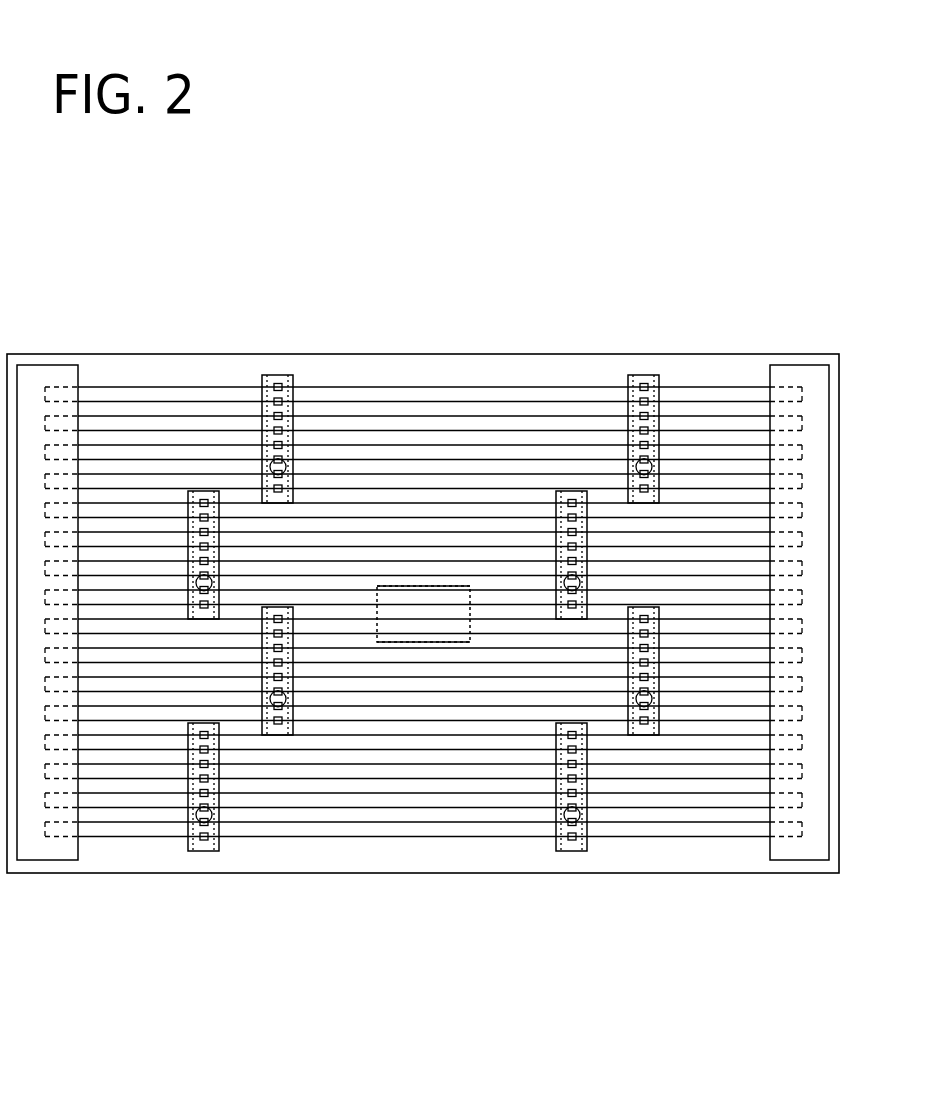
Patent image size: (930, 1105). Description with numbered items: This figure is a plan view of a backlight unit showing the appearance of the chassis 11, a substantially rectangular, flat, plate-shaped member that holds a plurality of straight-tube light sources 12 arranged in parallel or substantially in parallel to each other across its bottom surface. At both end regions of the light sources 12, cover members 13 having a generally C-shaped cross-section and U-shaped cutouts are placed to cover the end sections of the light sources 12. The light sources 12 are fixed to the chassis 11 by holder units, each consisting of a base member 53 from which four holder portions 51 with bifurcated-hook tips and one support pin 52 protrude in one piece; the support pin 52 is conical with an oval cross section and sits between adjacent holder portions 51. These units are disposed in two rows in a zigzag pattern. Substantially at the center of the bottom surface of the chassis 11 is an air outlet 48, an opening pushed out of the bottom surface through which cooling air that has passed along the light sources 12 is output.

The chassis 11 is at (144, 368).
The light sources 12 is at (452, 422).
The cover members 13 is at (45, 372).
The air outlet 48 is at (446, 586).
The holder portions 51 is at (277, 380).
The support pin 52 is at (196, 583).
The base member 53 is at (293, 375).